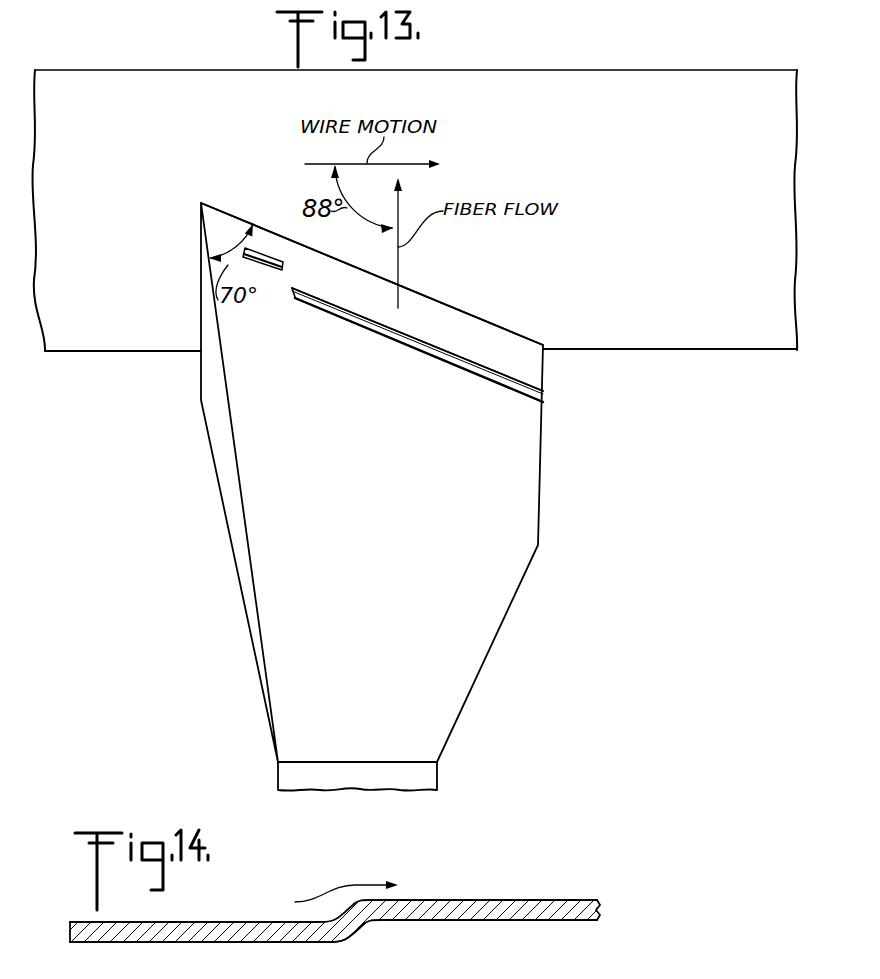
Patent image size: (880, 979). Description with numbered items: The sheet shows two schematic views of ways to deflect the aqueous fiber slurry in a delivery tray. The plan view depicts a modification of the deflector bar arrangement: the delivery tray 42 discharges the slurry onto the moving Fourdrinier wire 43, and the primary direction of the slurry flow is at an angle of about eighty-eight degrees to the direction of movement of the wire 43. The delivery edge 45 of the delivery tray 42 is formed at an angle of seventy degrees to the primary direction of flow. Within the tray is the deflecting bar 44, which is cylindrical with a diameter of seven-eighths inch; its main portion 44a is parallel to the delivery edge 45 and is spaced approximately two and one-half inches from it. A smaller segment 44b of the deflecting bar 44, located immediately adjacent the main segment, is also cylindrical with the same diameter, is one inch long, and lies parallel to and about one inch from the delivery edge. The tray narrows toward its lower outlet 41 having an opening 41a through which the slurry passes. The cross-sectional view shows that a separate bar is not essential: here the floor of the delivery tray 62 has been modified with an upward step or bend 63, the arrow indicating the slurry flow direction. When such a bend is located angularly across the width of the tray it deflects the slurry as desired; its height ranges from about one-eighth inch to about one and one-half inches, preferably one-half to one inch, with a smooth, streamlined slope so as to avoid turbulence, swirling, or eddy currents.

In FIG. 13, the outlet conduit 41 is at (440, 779).
In FIG. 13, the outlet opening 41a is at (334, 761).
In FIG. 13, the delivery tray 42 is at (233, 570).
In FIG. 13, the Fourdrinier wire 43 is at (580, 84).
In FIG. 13, the deflecting bar 44 is at (513, 404).
In FIG. 13, the deflector plate 44a is at (428, 354).
In FIG. 13, the smaller segment of the deflecting bar 44b is at (268, 272).
In FIG. 13, the delivery edge 45 is at (462, 312).
In FIG. 14, the delivery tray 62 is at (480, 899).
In FIG. 14, the step or bend 63 is at (353, 932).